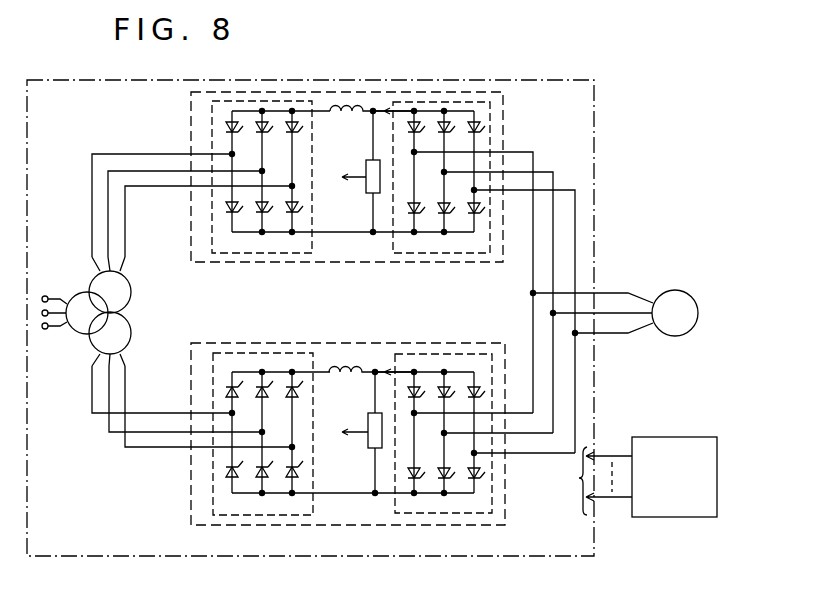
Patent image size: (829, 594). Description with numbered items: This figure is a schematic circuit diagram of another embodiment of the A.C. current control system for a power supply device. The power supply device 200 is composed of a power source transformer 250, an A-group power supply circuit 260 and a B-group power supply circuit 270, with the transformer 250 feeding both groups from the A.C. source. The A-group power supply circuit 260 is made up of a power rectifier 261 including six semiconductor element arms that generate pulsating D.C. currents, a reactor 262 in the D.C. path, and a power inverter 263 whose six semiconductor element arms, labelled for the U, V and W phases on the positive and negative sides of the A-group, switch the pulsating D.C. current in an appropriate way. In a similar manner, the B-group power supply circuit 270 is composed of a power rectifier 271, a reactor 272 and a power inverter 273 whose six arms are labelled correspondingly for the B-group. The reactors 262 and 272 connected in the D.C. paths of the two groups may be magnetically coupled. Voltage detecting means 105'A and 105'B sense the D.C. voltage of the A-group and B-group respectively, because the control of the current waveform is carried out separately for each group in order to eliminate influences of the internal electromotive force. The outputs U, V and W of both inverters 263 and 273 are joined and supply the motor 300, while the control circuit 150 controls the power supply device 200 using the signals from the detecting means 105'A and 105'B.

The power supply device 200 is at (595, 142).
The power source transformer 250 is at (128, 313).
The A-group power supply circuit 260 is at (223, 262).
The power rectifier 261 is at (312, 236).
The reactor 262 is at (349, 123).
The power inverter 263 is at (393, 224).
The voltage detecting means 105'A is at (364, 164).
The B-group power supply circuit 270 is at (238, 342).
The power rectifier 271 is at (313, 498).
The reactor 272 is at (348, 385).
The power inverter 273 is at (395, 485).
The voltage detecting means 105'B is at (366, 422).
The motor 300 is at (672, 290).
The control circuit 150 is at (664, 437).